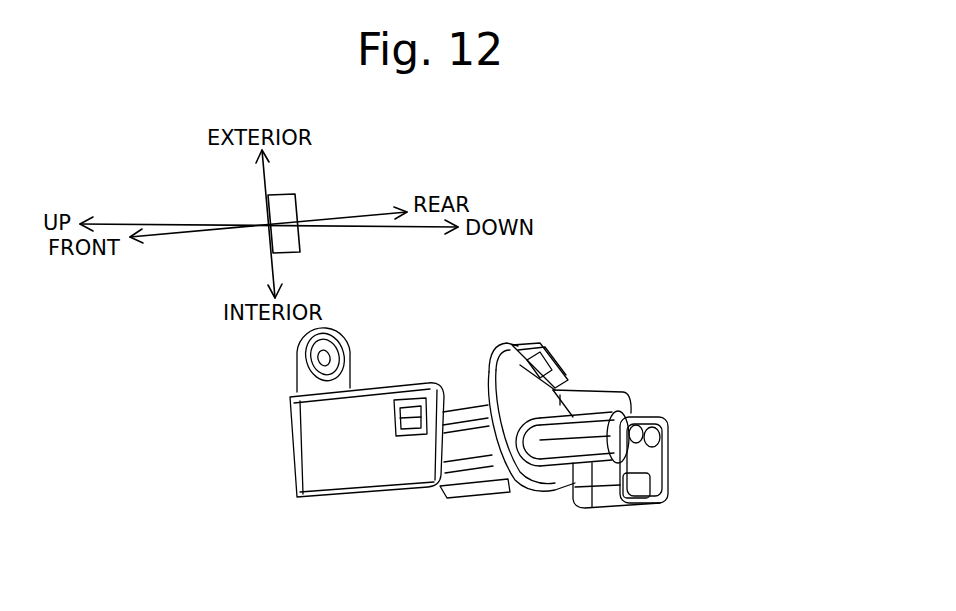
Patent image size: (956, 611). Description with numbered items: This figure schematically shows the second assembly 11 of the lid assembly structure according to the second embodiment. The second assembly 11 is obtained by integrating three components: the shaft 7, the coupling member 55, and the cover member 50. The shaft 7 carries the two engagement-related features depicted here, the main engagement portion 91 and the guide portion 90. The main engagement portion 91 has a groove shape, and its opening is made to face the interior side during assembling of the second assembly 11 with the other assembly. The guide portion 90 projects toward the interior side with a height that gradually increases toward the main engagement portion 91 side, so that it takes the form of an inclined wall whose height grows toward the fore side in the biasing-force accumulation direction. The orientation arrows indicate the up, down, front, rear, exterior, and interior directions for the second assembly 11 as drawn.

The second assembly 11 is at (275, 468).
The cover member 50 is at (372, 397).
The coupling member 55 is at (470, 482).
The shaft 7 is at (538, 482).
The guide portion 90 is at (547, 370).
The main engagement portion 91 is at (523, 362).